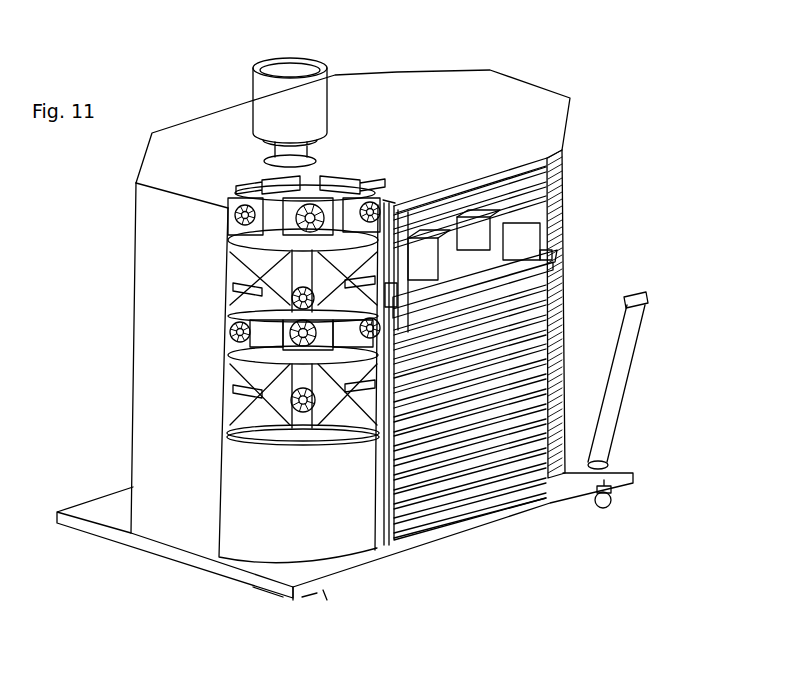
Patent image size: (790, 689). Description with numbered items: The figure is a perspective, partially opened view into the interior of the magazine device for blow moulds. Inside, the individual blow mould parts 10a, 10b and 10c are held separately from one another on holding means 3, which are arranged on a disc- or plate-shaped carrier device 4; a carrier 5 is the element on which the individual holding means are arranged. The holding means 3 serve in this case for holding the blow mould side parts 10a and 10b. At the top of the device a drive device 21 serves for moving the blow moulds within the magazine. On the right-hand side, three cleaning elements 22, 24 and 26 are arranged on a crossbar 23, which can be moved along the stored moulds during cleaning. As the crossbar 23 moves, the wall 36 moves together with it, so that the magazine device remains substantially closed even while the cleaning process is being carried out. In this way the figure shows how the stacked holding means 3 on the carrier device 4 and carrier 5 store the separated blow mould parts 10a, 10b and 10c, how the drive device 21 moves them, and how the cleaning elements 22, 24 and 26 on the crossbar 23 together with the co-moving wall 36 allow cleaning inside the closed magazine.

The holding means 3 is at (567, 220).
The carrier device 4 is at (240, 343).
The carrier 5 is at (228, 427).
The blow mould side part 10a is at (240, 258).
The blow mould side part 10b is at (245, 296).
The blow mould part 10c is at (392, 197).
The drive device 21 is at (302, 118).
The cleaning element 22 is at (500, 326).
The crossbar 23 is at (530, 279).
The cleaning element 24 is at (487, 288).
The cleaning element 26 is at (547, 258).
The wall 36 is at (555, 420).